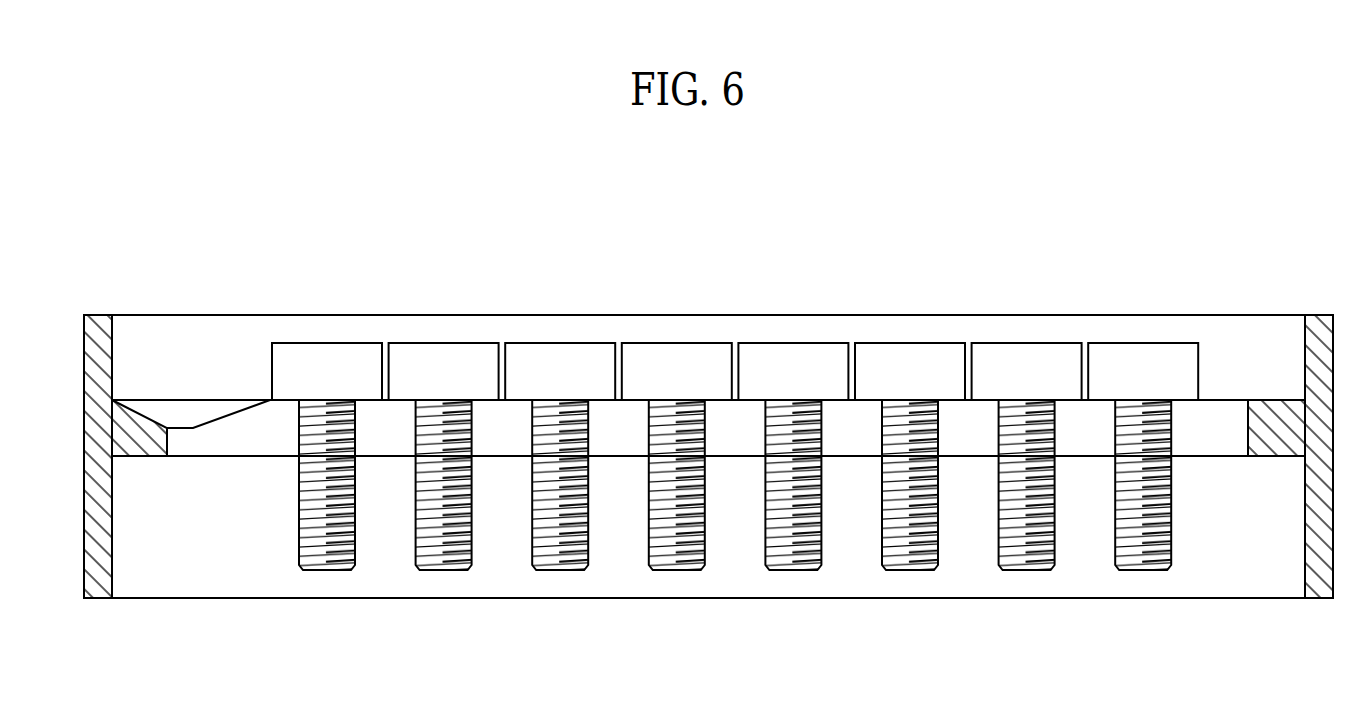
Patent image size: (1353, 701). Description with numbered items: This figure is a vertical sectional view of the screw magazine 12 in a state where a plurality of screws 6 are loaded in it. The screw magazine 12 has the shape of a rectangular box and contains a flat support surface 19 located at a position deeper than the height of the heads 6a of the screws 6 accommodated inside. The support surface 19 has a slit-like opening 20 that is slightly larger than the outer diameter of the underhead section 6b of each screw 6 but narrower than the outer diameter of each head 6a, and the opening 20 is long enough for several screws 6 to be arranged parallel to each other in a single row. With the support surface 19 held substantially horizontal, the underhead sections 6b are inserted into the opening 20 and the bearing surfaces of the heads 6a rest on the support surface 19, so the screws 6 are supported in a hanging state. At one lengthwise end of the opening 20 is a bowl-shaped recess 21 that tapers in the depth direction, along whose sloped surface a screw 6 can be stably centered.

The screw magazine 12 is at (728, 276).
The support surface 19 is at (520, 399).
The bowl-shaped recess 21 is at (155, 407).
The slit-like opening 20 is at (1247, 432).
The screw 6 is at (907, 454).
The head 6a is at (905, 342).
The underhead section 6b is at (881, 538).